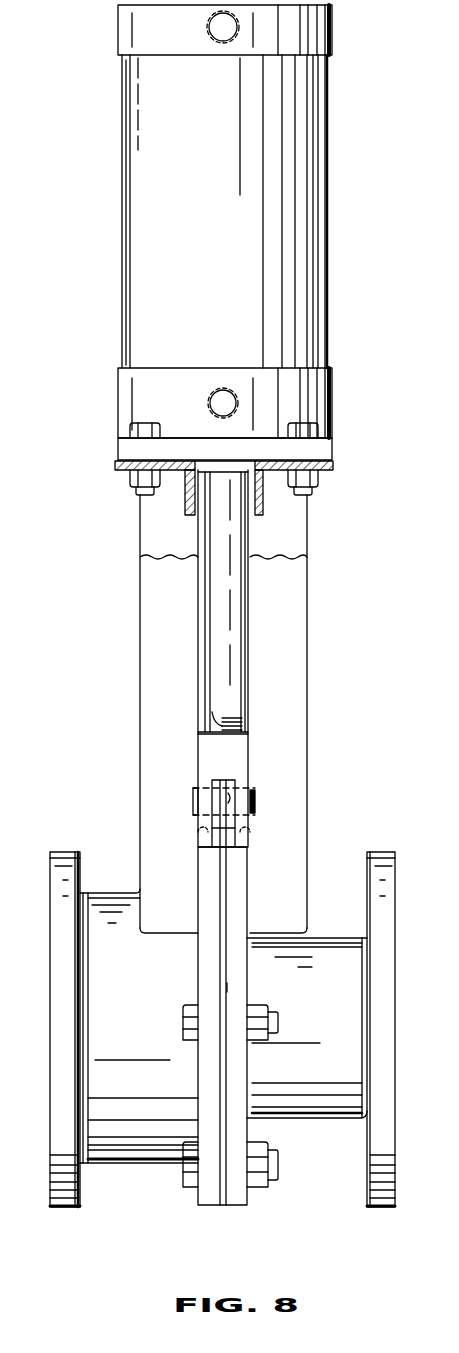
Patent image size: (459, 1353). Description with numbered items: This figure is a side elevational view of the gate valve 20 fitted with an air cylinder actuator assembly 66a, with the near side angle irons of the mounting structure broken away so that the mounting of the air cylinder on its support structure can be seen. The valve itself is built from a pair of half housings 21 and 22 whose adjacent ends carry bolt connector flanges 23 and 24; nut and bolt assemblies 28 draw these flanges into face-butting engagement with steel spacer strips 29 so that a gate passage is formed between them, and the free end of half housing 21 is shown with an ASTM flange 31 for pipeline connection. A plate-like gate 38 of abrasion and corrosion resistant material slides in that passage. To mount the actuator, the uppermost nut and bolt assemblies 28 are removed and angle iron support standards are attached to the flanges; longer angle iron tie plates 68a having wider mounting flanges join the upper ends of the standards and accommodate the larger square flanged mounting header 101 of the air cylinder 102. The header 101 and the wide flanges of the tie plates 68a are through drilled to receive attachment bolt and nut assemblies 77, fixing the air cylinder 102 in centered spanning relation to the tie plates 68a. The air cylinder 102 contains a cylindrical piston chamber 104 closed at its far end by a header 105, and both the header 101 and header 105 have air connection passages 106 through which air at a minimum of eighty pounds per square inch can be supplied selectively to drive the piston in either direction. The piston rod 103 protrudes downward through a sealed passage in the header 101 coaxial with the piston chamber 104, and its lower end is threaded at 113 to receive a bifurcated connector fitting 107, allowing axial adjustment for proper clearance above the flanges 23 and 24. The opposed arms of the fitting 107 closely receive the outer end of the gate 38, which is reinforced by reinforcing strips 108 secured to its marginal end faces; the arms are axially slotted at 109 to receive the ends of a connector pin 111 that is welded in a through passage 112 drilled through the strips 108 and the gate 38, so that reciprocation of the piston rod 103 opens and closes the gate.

The gate valve 20 is at (141, 1165).
The half housing 21 is at (141, 1007).
The half housing 22 is at (332, 945).
The bolt connector flange 23 is at (210, 949).
The bolt connector flange 24 is at (242, 912).
The nut and bolt assemblies 28 is at (266, 1012).
The steel spacer strips 29 is at (229, 988).
The ASTM flange 31 is at (50, 1022).
The gate 38 is at (230, 832).
The air cylinder actuator assembly 66a is at (330, 412).
The angle iron tie plates 68a is at (190, 512).
The attachment bolt and nut assemblies 77 is at (128, 480).
The square flanged mounting header 101 is at (134, 379).
The air cylinder 102 is at (168, 206).
The piston rod 103 is at (216, 599).
The cylindrical piston chamber 104 is at (206, 157).
The header 105 is at (155, 24).
The air connection passages 106 is at (218, 36).
The bifurcated connector fitting 107 is at (238, 744).
The reinforcing strips 108 is at (218, 783).
The axial slots 109 is at (203, 834).
The connector pin 111 is at (256, 803).
The through passage 112 is at (252, 790).
The threads 113 is at (216, 722).